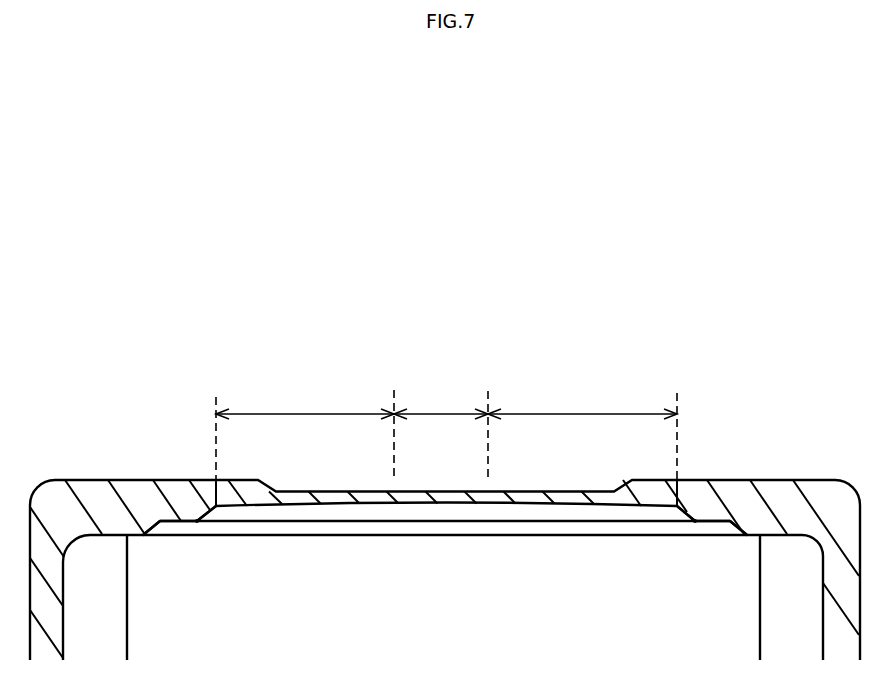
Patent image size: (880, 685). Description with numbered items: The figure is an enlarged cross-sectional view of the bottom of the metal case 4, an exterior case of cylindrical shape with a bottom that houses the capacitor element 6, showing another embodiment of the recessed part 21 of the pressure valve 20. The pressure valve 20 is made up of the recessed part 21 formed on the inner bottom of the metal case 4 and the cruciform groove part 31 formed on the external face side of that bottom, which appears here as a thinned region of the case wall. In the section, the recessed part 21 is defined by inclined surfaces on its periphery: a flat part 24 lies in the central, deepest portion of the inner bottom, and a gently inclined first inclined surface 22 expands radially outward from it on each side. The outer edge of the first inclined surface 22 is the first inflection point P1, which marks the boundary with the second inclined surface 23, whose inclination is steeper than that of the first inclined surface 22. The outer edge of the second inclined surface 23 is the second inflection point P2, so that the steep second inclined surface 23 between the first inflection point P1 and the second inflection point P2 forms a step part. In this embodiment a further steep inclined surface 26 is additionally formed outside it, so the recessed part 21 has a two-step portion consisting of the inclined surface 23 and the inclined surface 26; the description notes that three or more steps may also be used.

The metal case 4 is at (86, 498).
The capacitor element 6 is at (138, 562).
The pressure valve 20 is at (263, 398).
The recessed part 21 is at (432, 522).
The first inclined surface 22 is at (311, 414).
The second inclined surface 23 is at (212, 514).
The flat part 24 is at (443, 414).
The inclined surface 26 is at (153, 529).
The cruciform groove part 31 is at (525, 491).
The first inflection point P1 is at (216, 505).
The second inflection point P2 is at (198, 524).